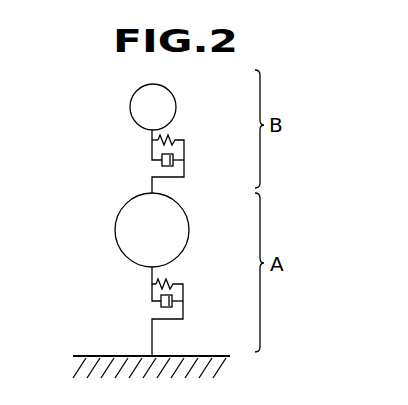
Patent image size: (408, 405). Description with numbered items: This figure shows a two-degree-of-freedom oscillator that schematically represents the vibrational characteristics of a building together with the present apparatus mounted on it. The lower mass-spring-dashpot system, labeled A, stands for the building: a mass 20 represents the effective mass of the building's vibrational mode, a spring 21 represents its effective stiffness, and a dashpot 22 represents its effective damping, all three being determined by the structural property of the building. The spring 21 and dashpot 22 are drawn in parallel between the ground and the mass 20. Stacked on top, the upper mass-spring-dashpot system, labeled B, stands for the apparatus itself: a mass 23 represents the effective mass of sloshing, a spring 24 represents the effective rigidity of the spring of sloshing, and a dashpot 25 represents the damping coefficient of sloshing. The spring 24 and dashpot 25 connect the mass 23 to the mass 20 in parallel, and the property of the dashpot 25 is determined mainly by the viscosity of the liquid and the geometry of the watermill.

The mass 20 is at (177, 232).
The spring 21 is at (172, 284).
The dashpot 22 is at (162, 305).
The mass 23 is at (172, 106).
The spring 24 is at (173, 140).
The dashpot 25 is at (163, 168).